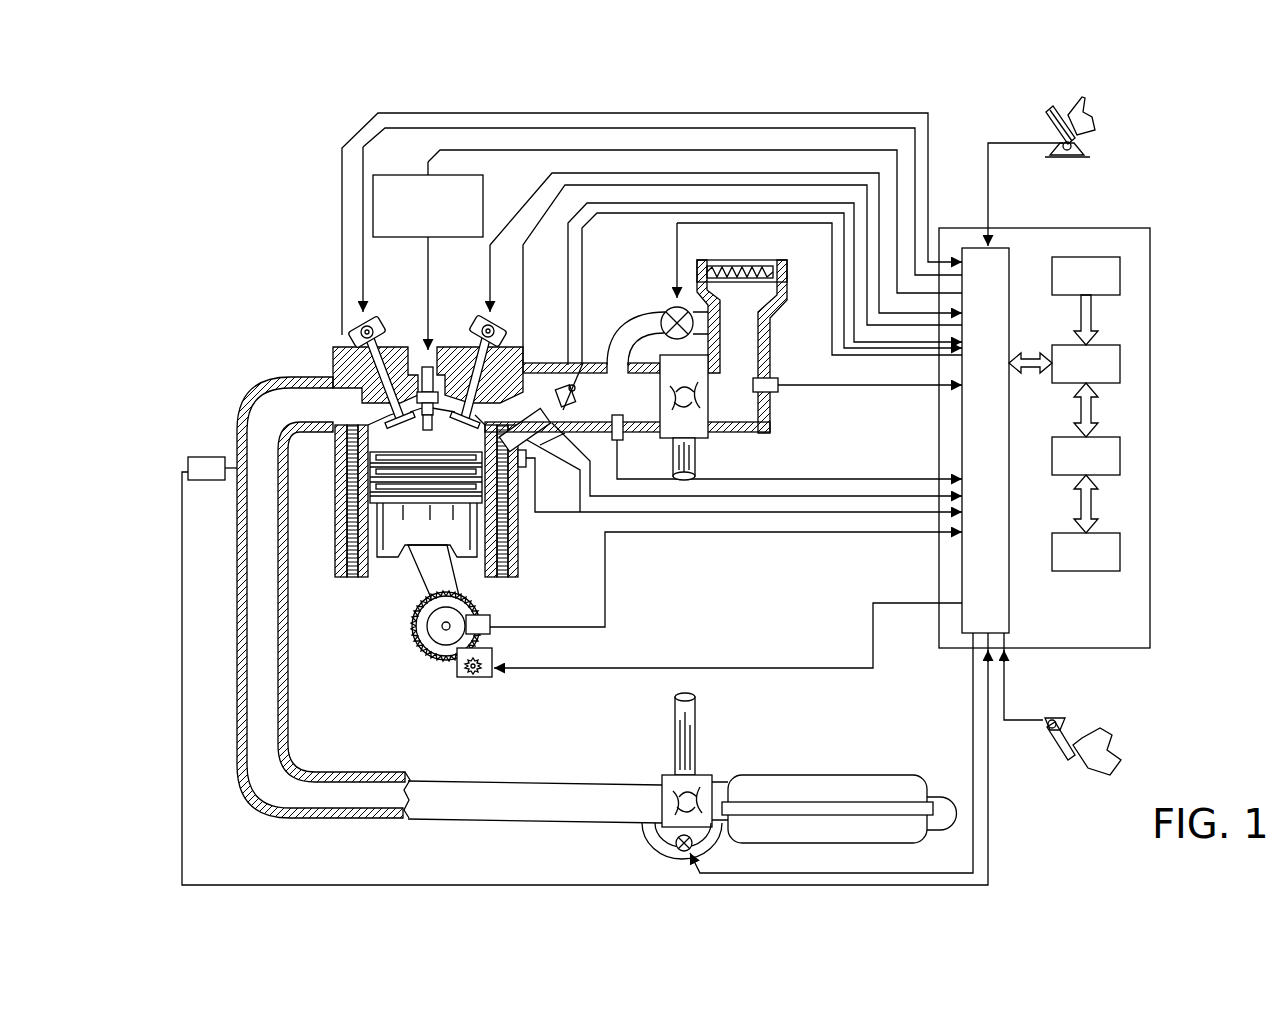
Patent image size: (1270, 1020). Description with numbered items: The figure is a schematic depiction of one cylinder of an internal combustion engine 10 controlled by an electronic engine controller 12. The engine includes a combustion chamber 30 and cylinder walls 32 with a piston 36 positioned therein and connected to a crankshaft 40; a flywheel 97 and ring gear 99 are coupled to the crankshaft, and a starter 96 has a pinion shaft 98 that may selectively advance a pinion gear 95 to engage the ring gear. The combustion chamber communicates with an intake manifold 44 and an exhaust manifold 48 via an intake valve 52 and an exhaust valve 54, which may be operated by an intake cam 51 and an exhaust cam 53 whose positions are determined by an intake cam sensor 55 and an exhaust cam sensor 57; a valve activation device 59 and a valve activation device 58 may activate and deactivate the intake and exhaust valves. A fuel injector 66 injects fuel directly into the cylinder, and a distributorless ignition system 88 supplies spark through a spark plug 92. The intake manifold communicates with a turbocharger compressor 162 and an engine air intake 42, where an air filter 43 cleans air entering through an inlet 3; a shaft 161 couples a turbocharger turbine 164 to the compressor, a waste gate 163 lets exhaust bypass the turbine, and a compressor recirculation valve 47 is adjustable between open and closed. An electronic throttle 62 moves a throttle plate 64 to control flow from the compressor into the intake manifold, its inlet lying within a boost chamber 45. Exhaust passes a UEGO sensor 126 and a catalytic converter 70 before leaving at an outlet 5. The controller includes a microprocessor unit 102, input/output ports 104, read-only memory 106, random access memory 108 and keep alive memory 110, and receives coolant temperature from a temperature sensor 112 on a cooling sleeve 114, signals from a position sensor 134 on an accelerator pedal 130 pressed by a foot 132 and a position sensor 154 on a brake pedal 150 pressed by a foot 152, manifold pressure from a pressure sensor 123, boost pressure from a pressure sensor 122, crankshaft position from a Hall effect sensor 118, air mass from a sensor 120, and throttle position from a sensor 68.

The inlet 3 is at (745, 254).
The outlet 5 is at (940, 792).
The internal combustion engine 10 is at (275, 300).
The electronic engine controller 12 is at (1150, 228).
The combustion chamber 30 is at (345, 540).
The cylinder walls 32 is at (372, 570).
The piston 36 is at (412, 545).
The crankshaft 40 is at (440, 640).
The engine air intake 42 is at (657, 268).
The air filter 43 is at (735, 278).
The intake manifold 44 is at (591, 384).
The boost chamber 45 is at (627, 407).
The compressor recirculation valve 47 is at (667, 312).
The exhaust manifold 48 is at (449, 600).
The intake cam 51 is at (484, 323).
The intake valve 52 is at (468, 405).
The exhaust cam 53 is at (370, 322).
The exhaust valve 54 is at (380, 405).
The intake cam sensor 55 is at (496, 325).
The exhaust cam sensor 57 is at (357, 330).
The valve activation device 58 is at (376, 333).
The valve activation device 59 is at (483, 333).
The electronic throttle 62 is at (574, 396).
The throttle plate 64 is at (568, 405).
The fuel injector 66 is at (538, 447).
The throttle position sensor 68 is at (578, 368).
The catalytic converter 70 is at (760, 775).
The distributorless ignition system 88 is at (385, 175).
The spark plug 92 is at (430, 365).
The pinion gear 95 is at (476, 676).
The starter 96 is at (488, 672).
The flywheel 97 is at (428, 622).
The pinion shaft 98 is at (468, 674).
The ring gear 99 is at (446, 660).
The microprocessor unit 102 is at (1120, 370).
The input/output ports 104 is at (1009, 258).
The read-only memory 106 is at (1120, 275).
The random access memory 108 is at (1120, 460).
The keep alive memory 110 is at (1120, 553).
The temperature sensor 112 is at (526, 465).
The cooling sleeve 114 is at (520, 530).
The Hall effect sensor 118 is at (488, 620).
The air mass sensor 120 is at (772, 378).
The pressure sensor 122 is at (622, 440).
The pressure sensor 123 is at (560, 437).
The UEGO sensor 126 is at (188, 462).
The accelerator pedal 130 is at (1047, 112).
The foot 132 is at (1087, 103).
The position sensor 134 is at (1072, 147).
The brake pedal 150 is at (1070, 758).
The foot 152 is at (1105, 732).
The position sensor 154 is at (1045, 722).
The shaft 161 is at (696, 457).
The turbocharger compressor 162 is at (700, 420).
The waste gate 163 is at (676, 850).
The turbocharger turbine 164 is at (665, 775).